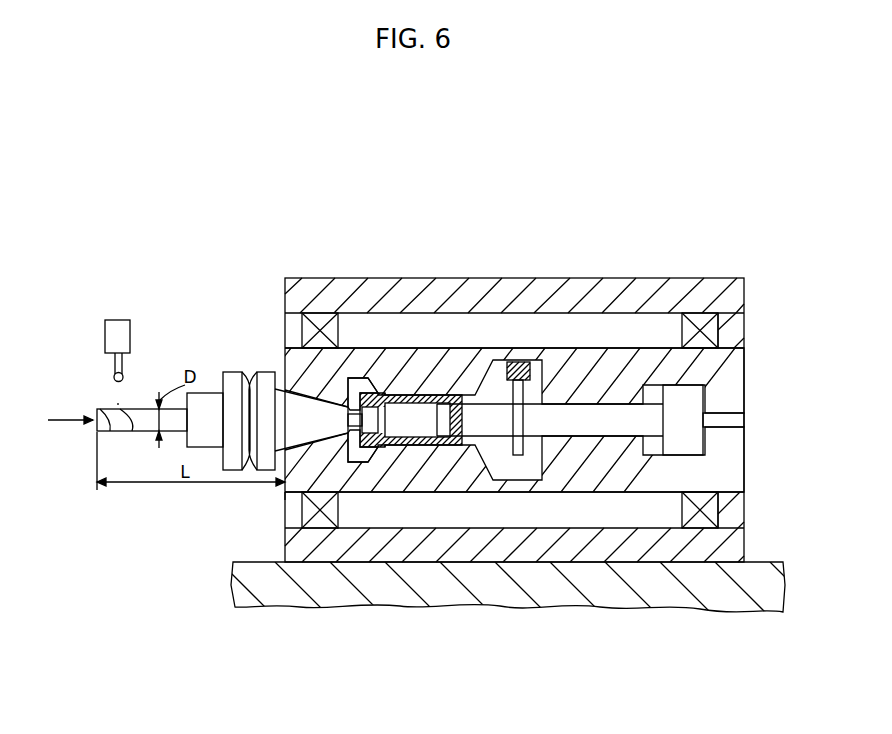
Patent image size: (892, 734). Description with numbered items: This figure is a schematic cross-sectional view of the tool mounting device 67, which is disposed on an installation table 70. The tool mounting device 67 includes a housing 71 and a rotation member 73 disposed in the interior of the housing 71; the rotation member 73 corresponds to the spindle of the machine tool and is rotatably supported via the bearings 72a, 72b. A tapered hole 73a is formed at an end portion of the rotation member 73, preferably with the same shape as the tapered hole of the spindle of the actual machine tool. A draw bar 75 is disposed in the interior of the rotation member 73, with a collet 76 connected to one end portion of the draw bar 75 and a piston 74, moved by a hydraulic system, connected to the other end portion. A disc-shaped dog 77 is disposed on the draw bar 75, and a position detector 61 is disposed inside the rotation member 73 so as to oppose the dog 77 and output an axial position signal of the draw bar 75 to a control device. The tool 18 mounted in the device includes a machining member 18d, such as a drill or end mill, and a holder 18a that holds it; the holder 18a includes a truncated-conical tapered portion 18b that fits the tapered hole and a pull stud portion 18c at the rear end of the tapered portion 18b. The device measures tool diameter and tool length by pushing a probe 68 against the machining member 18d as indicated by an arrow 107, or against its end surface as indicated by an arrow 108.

The tool 18 is at (212, 407).
The holder 18a is at (317, 242).
The tapered portion 18b is at (312, 417).
The pull stud portion 18c is at (378, 415).
The machining member 18d is at (120, 427).
The position detector 61 is at (521, 361).
The tool mounting device 67 is at (653, 262).
The probe 68 is at (118, 320).
The installation table 70 is at (763, 597).
The housing 71 is at (717, 287).
The bearing 72a is at (312, 500).
The bearing 72b is at (702, 526).
The rotation member 73 is at (582, 480).
The tapered hole 73a is at (285, 497).
The piston 74 is at (680, 448).
The draw bar 75 is at (622, 428).
The collet 76 is at (413, 446).
The dog 77 is at (512, 460).
The arrow 107 is at (118, 402).
The arrow 108 is at (65, 421).